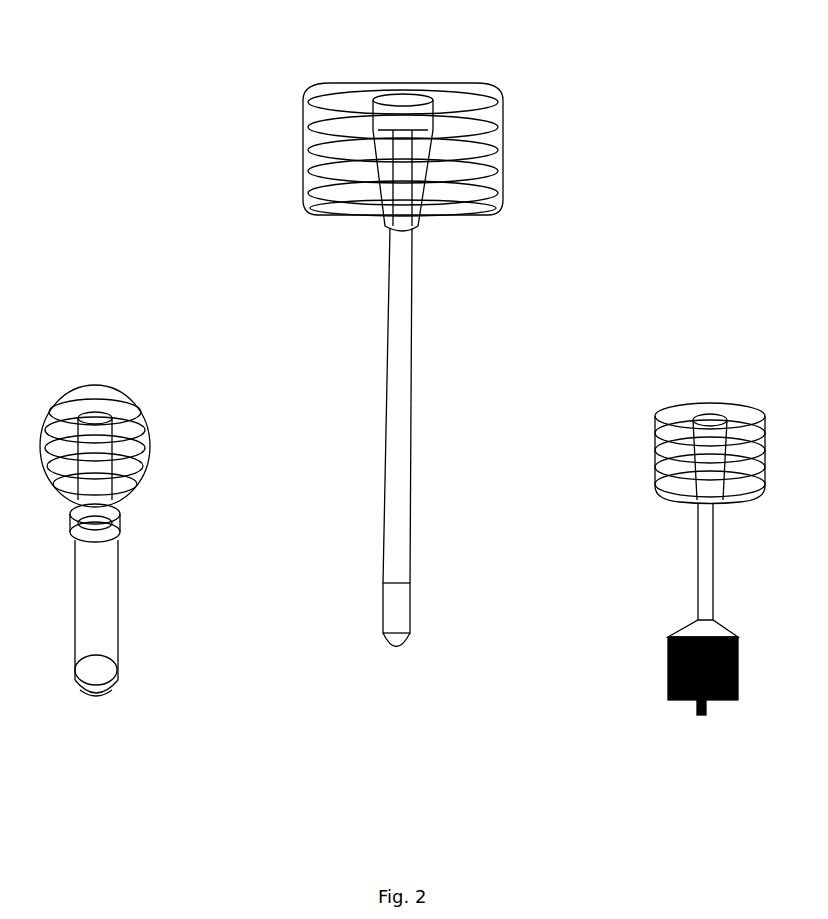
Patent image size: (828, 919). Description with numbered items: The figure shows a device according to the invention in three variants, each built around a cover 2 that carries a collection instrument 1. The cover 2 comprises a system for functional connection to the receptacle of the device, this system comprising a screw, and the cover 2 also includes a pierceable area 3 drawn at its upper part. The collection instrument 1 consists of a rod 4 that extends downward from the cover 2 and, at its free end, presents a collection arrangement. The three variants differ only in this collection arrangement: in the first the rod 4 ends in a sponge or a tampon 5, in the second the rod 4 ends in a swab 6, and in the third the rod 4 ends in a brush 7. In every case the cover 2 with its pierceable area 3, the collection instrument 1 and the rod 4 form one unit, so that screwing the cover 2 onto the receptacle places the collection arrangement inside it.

The collection instrument 1 is at (517, 95).
The cover 2 is at (272, 73).
The pierceable area 3 is at (418, 104).
The rod 4 is at (333, 648).
The sponge or tampon 5 is at (102, 600).
The swab 6 is at (400, 475).
The brush 7 is at (742, 690).